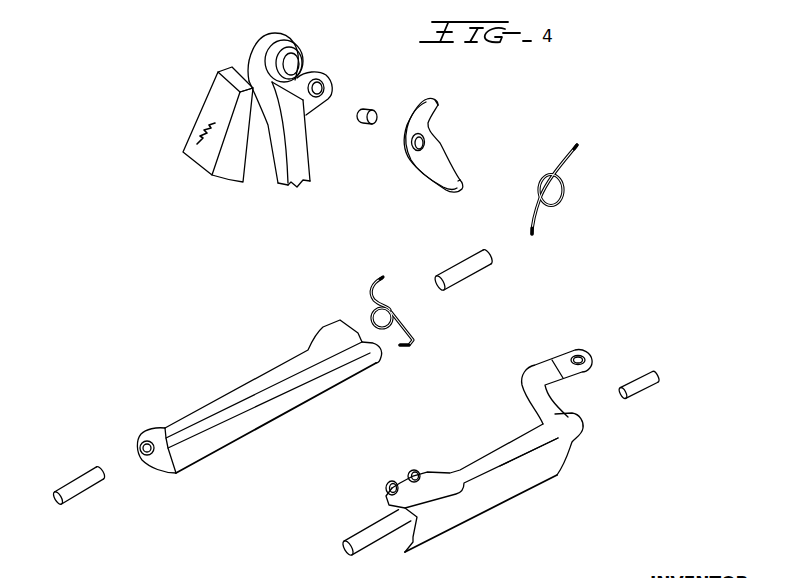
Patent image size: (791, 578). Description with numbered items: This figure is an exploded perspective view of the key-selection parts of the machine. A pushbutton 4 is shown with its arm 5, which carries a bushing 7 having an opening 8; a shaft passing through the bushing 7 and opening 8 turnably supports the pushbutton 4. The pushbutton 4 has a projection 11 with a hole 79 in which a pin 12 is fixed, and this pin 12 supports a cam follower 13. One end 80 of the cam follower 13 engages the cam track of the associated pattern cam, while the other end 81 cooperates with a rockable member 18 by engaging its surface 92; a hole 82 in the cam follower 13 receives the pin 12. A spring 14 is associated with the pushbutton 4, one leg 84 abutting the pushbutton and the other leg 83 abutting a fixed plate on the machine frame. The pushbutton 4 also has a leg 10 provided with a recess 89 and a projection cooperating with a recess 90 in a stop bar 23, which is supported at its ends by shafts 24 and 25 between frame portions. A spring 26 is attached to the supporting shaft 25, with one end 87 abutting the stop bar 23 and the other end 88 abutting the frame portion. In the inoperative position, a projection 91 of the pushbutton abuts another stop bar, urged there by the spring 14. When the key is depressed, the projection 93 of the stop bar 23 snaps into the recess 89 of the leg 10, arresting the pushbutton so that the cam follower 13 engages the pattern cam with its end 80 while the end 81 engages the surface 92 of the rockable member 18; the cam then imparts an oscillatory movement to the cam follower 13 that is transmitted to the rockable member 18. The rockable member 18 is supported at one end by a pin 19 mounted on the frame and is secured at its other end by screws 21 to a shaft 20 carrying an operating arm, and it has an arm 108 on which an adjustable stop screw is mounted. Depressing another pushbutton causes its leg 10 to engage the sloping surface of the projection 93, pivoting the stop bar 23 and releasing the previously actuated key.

The pushbutton 4 is at (203, 157).
The arm 5 is at (250, 83).
The bushing 7 is at (272, 53).
The opening 8 is at (283, 52).
The leg 10 is at (305, 153).
The projection 11 is at (318, 77).
The hole 79 is at (325, 87).
The pin 12 is at (368, 108).
The cam follower 13 is at (423, 162).
The end of cam follower 81 is at (440, 103).
The cam hole 82 is at (426, 142).
The end of cam follower 80 is at (460, 184).
The spring 14 is at (564, 187).
The leg of spring 83 is at (576, 145).
The leg of spring 84 is at (534, 230).
The shaft 25 is at (468, 262).
The spring 26 is at (392, 309).
The end of spring 88 is at (382, 278).
The end of spring 87 is at (410, 343).
The stop bar 23 is at (325, 335).
The recess 90 is at (240, 404).
The projection 93 is at (296, 398).
The shaft 24 is at (80, 492).
The rockable member 18 is at (482, 462).
The screws 21 is at (411, 471).
The shaft 20 is at (374, 532).
The arm 108 is at (530, 388).
The surface 92 is at (512, 487).
The pin 19 is at (640, 392).
The recess 89 is at (298, 188).
The projection 91 is at (282, 187).